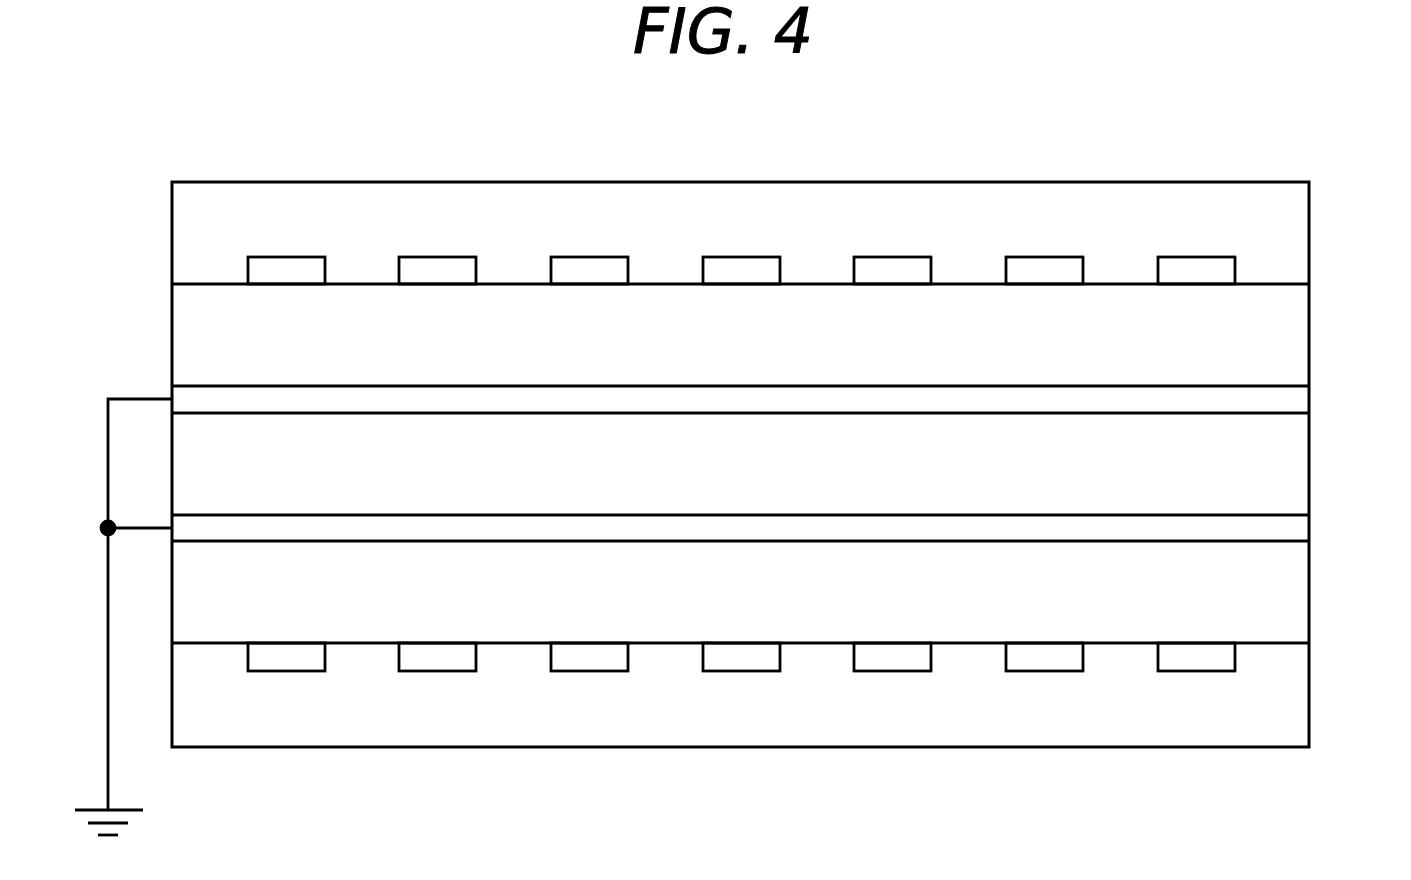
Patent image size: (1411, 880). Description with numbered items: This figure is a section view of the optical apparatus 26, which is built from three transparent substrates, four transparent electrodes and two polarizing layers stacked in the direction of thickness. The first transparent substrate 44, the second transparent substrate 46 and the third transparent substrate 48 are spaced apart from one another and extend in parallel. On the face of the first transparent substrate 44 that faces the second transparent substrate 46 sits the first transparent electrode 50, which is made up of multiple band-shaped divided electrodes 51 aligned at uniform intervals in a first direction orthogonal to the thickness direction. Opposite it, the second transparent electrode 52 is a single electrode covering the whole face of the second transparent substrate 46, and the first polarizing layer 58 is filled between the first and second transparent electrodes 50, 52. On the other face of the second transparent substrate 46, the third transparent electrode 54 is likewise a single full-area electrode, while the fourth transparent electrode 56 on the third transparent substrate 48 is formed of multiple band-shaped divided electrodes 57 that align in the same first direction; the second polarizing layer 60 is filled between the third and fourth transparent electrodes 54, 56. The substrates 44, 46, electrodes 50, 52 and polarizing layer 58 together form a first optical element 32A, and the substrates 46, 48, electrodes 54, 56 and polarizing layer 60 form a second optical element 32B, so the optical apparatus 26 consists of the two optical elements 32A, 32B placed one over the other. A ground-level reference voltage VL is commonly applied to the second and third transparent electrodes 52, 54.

The optical apparatus 26 is at (257, 118).
The second optical element 32B is at (148, 203).
The first optical element 32A is at (172, 775).
The third transparent substrate 48 is at (1293, 237).
The second polarizing layer 60 is at (1293, 334).
The third transparent electrode 54 is at (1293, 401).
The second transparent substrate 46 is at (1293, 464).
The second transparent electrode 52 is at (1293, 530).
The first polarizing layer 58 is at (1293, 593).
The first transparent substrate 44 is at (1293, 699).
The divided electrodes 57 is at (1033, 265).
The fourth transparent electrode 56 is at (1062, 238).
The divided electrodes 51 is at (1033, 659).
The first transparent electrode 50 is at (1062, 692).
The reference voltage VL is at (108, 588).